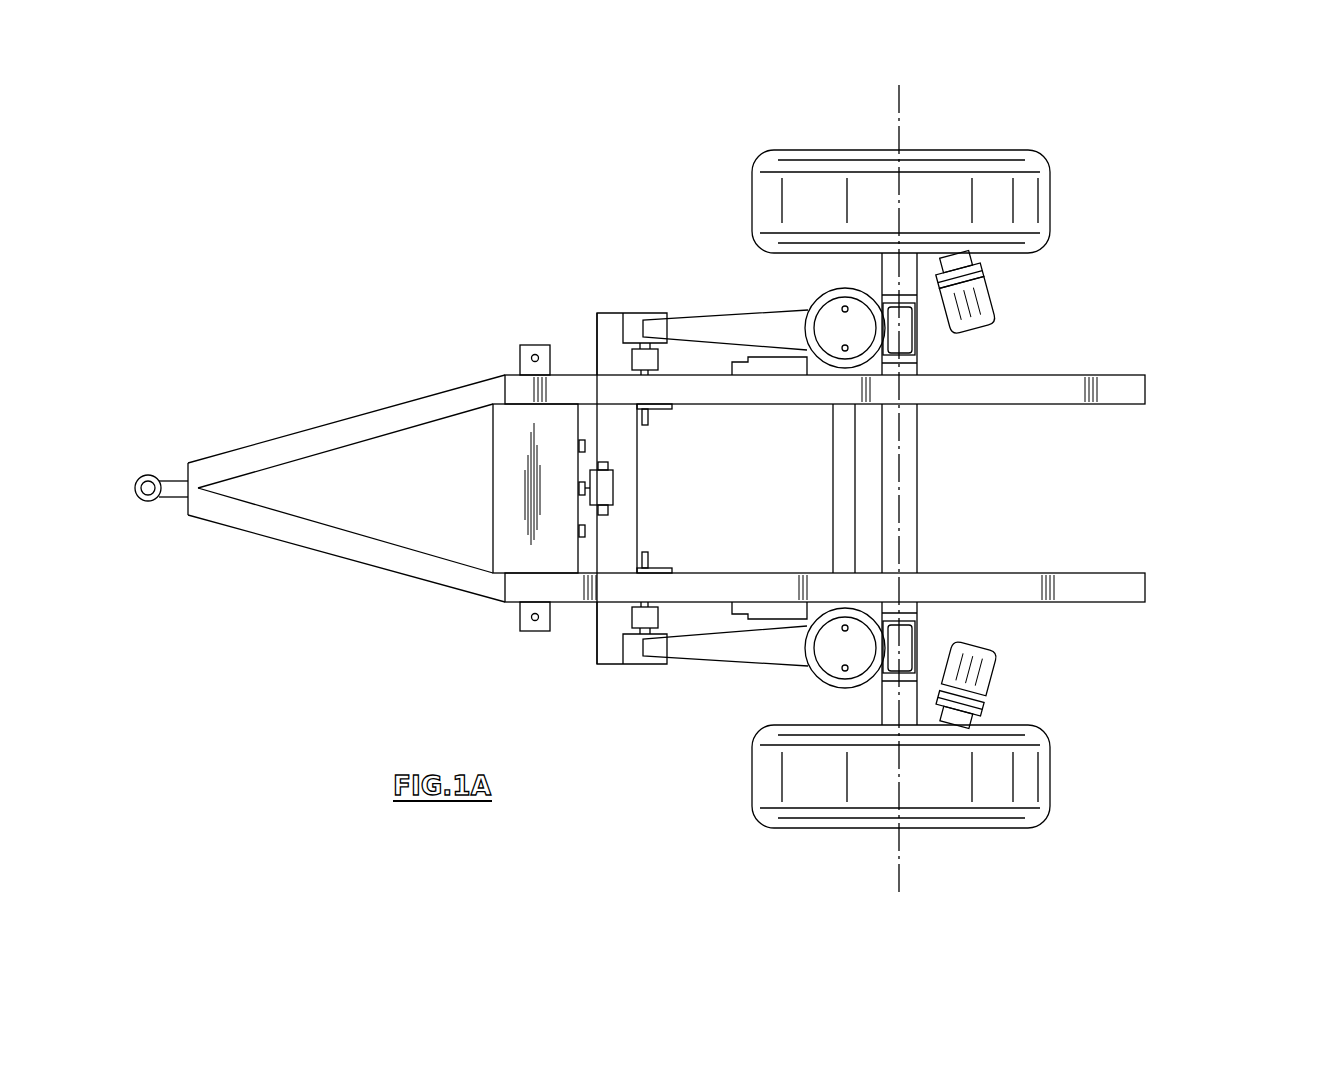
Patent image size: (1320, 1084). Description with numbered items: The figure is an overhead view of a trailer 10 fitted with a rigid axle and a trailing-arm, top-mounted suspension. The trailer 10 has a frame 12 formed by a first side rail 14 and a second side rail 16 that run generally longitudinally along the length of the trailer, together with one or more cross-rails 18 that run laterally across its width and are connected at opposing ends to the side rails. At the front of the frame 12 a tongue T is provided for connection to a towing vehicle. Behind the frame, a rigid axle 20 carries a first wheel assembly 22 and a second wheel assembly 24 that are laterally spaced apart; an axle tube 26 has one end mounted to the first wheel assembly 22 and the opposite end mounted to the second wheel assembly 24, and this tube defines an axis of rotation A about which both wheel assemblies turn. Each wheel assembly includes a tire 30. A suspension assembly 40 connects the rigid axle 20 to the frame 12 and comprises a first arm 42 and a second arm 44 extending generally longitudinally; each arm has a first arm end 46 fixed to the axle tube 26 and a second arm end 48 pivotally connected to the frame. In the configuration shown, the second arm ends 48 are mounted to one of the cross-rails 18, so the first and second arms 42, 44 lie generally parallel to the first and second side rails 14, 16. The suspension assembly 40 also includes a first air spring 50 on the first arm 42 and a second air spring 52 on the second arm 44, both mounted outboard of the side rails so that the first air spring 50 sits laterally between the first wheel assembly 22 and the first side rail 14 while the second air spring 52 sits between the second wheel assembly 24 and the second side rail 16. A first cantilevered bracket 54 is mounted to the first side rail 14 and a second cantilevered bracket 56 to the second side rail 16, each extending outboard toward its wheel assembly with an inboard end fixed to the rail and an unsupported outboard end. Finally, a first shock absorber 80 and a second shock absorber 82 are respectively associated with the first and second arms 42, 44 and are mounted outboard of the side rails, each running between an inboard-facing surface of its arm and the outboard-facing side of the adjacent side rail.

The trailer 10 is at (1186, 204).
The frame 12 is at (408, 413).
The tongue T is at (207, 505).
The first side rail 14 is at (1132, 390).
The second side rail 16 is at (1132, 588).
The cross-rails 18 is at (637, 475).
The rigid axle 20 is at (952, 464).
The first wheel assembly 22 is at (1078, 178).
The second wheel assembly 24 is at (1068, 790).
The axle tube 26 is at (918, 547).
The tire 30 is at (797, 155).
The suspension assembly 40 is at (772, 672).
The first arm 42 is at (762, 323).
The second arm 44 is at (713, 653).
The first arm end 46 is at (905, 337).
The second arm end 48 is at (648, 330).
The first air spring 50 is at (826, 292).
The second air spring 52 is at (845, 690).
The first cantilevered bracket 54 is at (857, 310).
The second cantilevered bracket 56 is at (840, 635).
The first shock absorber 80 is at (775, 368).
The second shock absorber 82 is at (776, 600).
The axis of rotation A is at (899, 870).